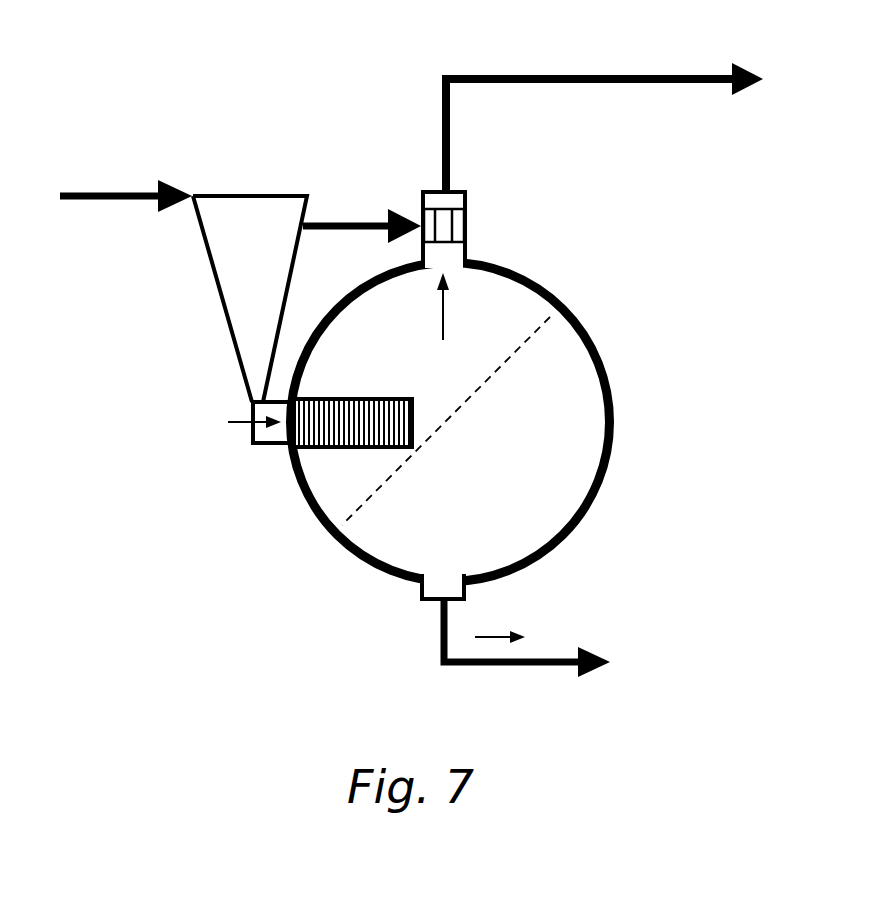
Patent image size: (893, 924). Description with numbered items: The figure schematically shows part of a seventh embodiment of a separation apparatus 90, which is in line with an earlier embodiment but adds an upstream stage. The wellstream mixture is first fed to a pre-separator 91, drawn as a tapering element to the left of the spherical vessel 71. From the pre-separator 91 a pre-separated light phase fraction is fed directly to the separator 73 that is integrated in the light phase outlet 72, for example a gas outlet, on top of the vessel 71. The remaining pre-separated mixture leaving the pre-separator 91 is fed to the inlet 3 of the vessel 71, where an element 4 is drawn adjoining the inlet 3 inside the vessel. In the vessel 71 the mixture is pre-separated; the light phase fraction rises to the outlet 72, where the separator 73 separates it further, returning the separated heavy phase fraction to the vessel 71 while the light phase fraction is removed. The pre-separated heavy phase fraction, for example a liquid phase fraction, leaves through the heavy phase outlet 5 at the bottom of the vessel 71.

The separation apparatus 90 is at (120, 104).
The pre-separator 91 is at (240, 265).
The separator 73 is at (459, 221).
The light phase outlet 72 is at (458, 275).
The filter element 4 is at (381, 402).
The inlet 3 is at (252, 443).
The spherical vessel 71 is at (305, 510).
The heavy phase outlet 5 is at (420, 593).